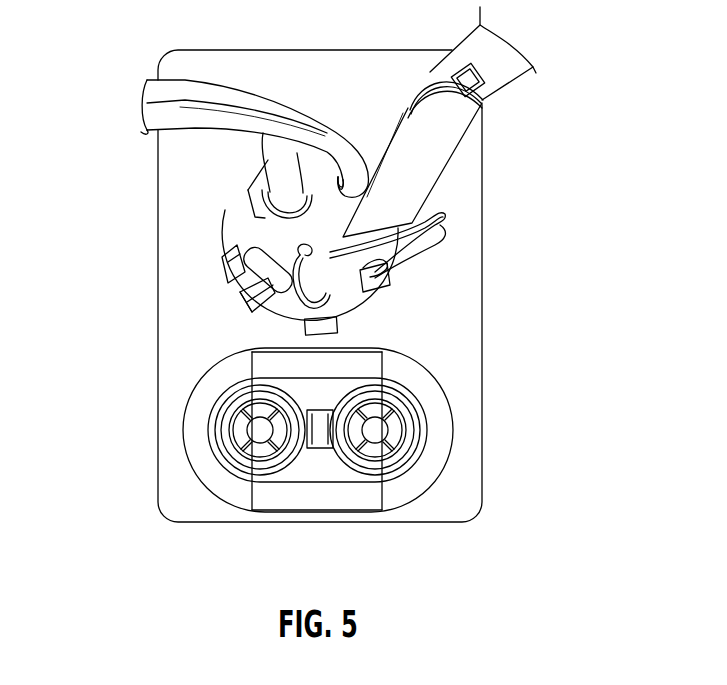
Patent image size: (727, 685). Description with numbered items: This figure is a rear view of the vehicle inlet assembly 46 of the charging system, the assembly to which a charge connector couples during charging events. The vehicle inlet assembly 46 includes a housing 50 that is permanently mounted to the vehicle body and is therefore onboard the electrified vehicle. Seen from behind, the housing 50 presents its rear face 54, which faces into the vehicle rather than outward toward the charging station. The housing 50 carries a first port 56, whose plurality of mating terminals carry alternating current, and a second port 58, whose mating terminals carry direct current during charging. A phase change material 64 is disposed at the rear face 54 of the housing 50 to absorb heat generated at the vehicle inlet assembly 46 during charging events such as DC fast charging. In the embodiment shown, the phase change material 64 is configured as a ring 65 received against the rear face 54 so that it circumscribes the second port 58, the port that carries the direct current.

The vehicle inlet assembly 46 is at (140, 159).
The housing 50 is at (482, 283).
The rear face 54 is at (465, 355).
The first port 56 is at (214, 237).
The second port 58 is at (308, 473).
The phase change material 64 is at (408, 482).
The ring 65 is at (455, 440).